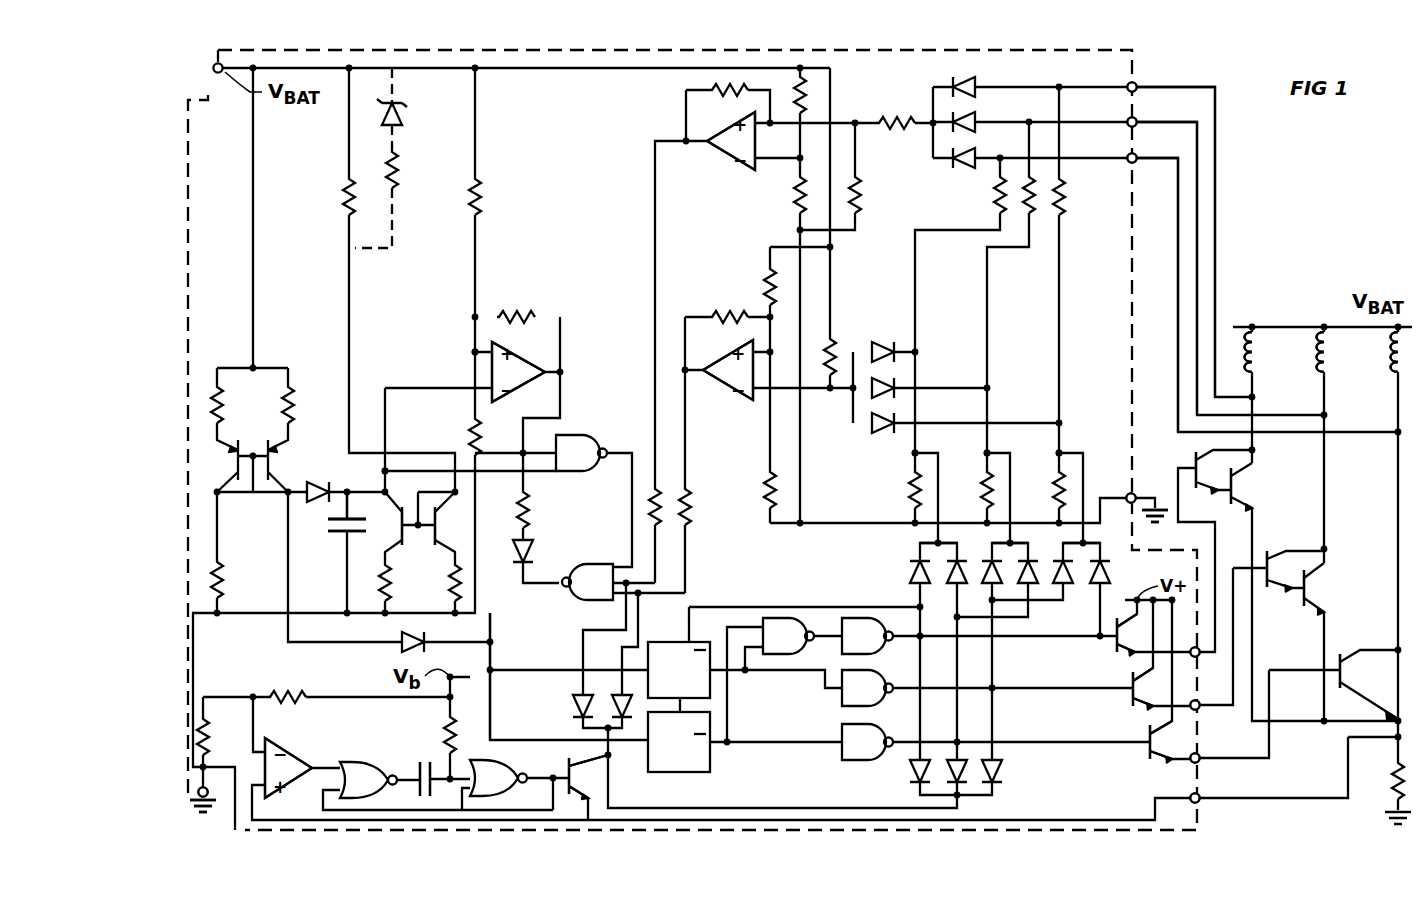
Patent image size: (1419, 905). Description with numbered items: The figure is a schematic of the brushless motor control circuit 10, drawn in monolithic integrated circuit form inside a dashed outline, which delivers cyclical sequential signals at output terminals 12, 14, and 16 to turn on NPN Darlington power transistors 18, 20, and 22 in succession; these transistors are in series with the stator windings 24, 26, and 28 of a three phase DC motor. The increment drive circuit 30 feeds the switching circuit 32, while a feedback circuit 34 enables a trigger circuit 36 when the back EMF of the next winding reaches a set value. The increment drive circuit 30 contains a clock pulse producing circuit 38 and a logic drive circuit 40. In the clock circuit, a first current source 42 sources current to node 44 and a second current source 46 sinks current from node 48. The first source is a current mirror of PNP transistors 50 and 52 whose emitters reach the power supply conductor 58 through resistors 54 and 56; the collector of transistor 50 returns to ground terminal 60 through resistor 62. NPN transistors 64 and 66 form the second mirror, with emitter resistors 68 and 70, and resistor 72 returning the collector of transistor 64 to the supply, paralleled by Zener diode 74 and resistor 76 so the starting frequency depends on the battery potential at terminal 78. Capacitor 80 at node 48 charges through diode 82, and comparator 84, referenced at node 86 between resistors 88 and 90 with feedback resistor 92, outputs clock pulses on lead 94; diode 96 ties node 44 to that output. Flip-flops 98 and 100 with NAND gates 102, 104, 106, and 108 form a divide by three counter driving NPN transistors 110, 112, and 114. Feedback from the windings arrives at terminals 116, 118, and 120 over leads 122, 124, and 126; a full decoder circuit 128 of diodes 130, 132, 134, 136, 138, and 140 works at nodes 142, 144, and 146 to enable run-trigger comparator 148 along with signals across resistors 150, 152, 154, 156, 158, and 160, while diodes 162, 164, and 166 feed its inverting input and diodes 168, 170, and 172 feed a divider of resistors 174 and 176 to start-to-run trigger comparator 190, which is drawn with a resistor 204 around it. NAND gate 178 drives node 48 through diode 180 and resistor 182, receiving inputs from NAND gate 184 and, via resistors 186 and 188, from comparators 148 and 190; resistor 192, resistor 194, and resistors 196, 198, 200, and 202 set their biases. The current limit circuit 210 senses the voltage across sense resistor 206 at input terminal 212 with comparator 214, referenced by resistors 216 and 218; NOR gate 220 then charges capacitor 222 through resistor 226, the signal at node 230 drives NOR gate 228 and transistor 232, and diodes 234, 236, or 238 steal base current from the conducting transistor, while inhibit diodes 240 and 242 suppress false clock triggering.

The control circuit 10 is at (1250, 274).
The output terminal 12 is at (1203, 671).
The output terminal 14 is at (1200, 712).
The output terminal 16 is at (1201, 764).
The NPN Darlington power transistor 18 is at (1268, 500).
The NPN Darlington power transistor 20 is at (1340, 542).
The NPN Darlington power transistor 22 is at (1373, 637).
The stator winding 24 is at (1258, 365).
The stator winding 26 is at (1332, 348).
The stator winding 28 is at (1398, 365).
The increment drive circuit 30 is at (492, 250).
The switching circuit 32 is at (1148, 787).
The feedback circuit 34 is at (942, 320).
The trigger circuit 36 is at (690, 262).
The clock pulse producing circuit 38 is at (393, 357).
The logic drive circuit 40 is at (764, 702).
The first current source 42 is at (269, 542).
The node 44 is at (340, 516).
The second current source 46 is at (416, 537).
The node 48 is at (383, 468).
The PNP transistor 50 is at (232, 482).
The PNP transistor 52 is at (272, 452).
The resistor 54 is at (222, 410).
The resistor 56 is at (292, 397).
The power supply conductor 58 is at (520, 70).
The terminal 60 is at (208, 787).
The resistor 62 is at (224, 588).
The NPN transistor 64 is at (436, 505).
The NPN transistor 66 is at (404, 505).
The resistor 68 is at (389, 580).
The resistor 70 is at (452, 588).
The resistor 72 is at (343, 193).
The Zener diode 74 is at (405, 104).
The resistor 76 is at (400, 170).
The terminal 78 is at (215, 78).
The capacitor 80 is at (335, 535).
The diode 82 is at (315, 481).
The comparator 84 is at (545, 358).
The node 86 is at (472, 353).
The resistor 88 is at (482, 195).
The resistor 90 is at (480, 438).
The resistor 92 is at (505, 313).
The lead 94 is at (492, 618).
The diode 96 is at (400, 646).
The flip-flop 98 is at (658, 642).
The flip-flop 100 is at (690, 773).
The NAND gate 102 is at (778, 622).
The NAND gate 104 is at (845, 706).
The NAND gate 106 is at (842, 752).
The NAND gate 108 is at (855, 615).
The NPN transistor 110 is at (1117, 653).
The NPN transistor 112 is at (1133, 708).
The NPN transistor 114 is at (1152, 762).
The feedback input terminal 116 is at (1137, 87).
The feedback input terminal 118 is at (1137, 121).
The feedback input terminal 120 is at (1137, 157).
The lead 122 is at (1215, 122).
The lead 124 is at (1197, 172).
The lead 126 is at (1178, 218).
The full decoder circuit 128 is at (872, 552).
The diode 130 is at (916, 548).
The diode 132 is at (940, 565).
The diode 134 is at (990, 600).
The diode 136 is at (1032, 610).
The diode 138 is at (1066, 590).
The diode 140 is at (1098, 600).
The node 142 is at (918, 452).
The node 144 is at (989, 452).
The node 146 is at (1061, 452).
The run-trigger comparator 148 is at (740, 400).
The resistor 150 is at (996, 185).
The resistor 152 is at (910, 490).
The resistor 154 is at (1024, 205).
The resistor 156 is at (982, 500).
The resistor 158 is at (1065, 188).
The resistor 160 is at (1055, 478).
The diode 162 is at (870, 348).
The diode 164 is at (900, 382).
The diode 166 is at (900, 420).
The diode 168 is at (972, 85).
The diode 170 is at (972, 120).
The diode 172 is at (972, 156).
The resistor 174 is at (880, 120).
The resistor 176 is at (860, 190).
The NAND gate 178 is at (590, 598).
The diode 180 is at (532, 548).
The resistor 182 is at (530, 505).
The NAND gate 184 is at (590, 434).
The resistor 186 is at (690, 500).
The resistor 188 is at (660, 520).
The start-to-run trigger comparator 190 is at (720, 157).
The resistor 192 is at (833, 335).
The resistor 194 is at (733, 312).
The resistor 196 is at (765, 280).
The resistor 198 is at (765, 485).
The resistor 200 is at (808, 97).
The resistor 202 is at (797, 190).
The feedback resistor 204 is at (710, 85).
The sense resistor 206 is at (1382, 757).
The current limit circuit 210 is at (380, 721).
The input terminal 212 is at (1202, 805).
The comparator 214 is at (290, 750).
The resistor 216 is at (268, 692).
The resistor 218 is at (208, 715).
The NOR gate 220 is at (378, 762).
The capacitor 222 is at (418, 760).
The resistor 226 is at (470, 707).
The NOR gate 228 is at (516, 757).
The node 230 is at (458, 735).
The transistor 232 is at (612, 790).
The diode 234 is at (912, 770).
The diode 236 is at (960, 792).
The diode 238 is at (1002, 766).
The inhibit diode 240 is at (578, 698).
The inhibit diode 242 is at (615, 690).